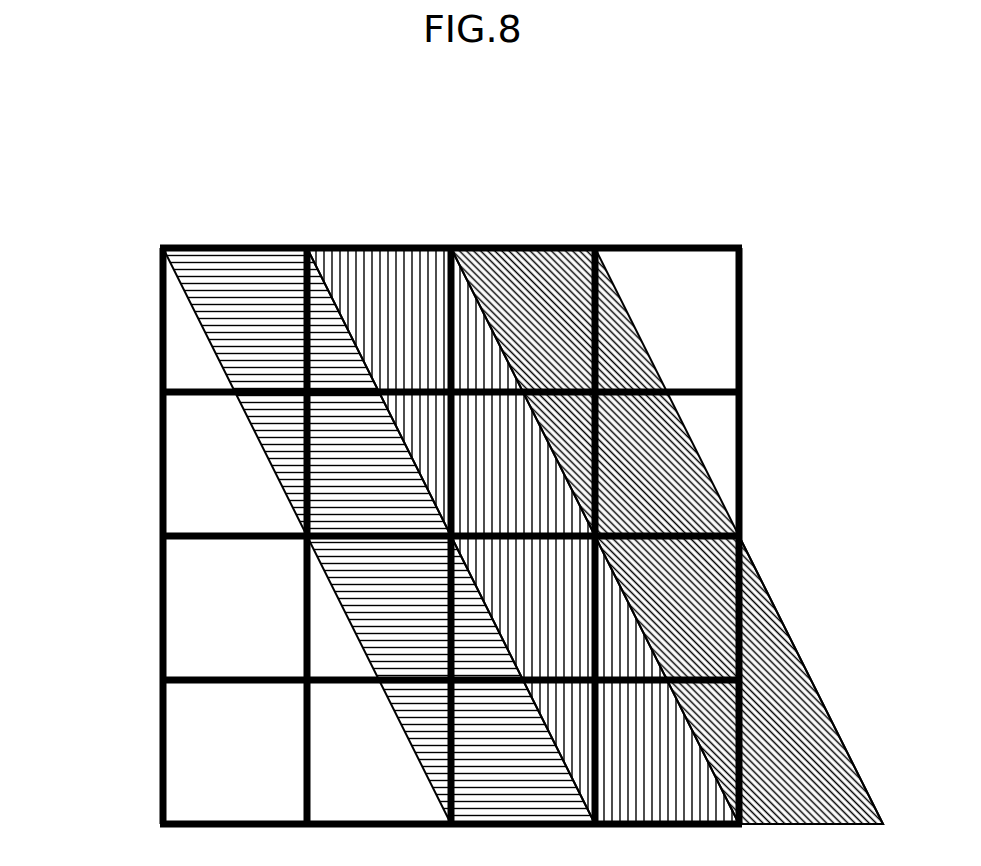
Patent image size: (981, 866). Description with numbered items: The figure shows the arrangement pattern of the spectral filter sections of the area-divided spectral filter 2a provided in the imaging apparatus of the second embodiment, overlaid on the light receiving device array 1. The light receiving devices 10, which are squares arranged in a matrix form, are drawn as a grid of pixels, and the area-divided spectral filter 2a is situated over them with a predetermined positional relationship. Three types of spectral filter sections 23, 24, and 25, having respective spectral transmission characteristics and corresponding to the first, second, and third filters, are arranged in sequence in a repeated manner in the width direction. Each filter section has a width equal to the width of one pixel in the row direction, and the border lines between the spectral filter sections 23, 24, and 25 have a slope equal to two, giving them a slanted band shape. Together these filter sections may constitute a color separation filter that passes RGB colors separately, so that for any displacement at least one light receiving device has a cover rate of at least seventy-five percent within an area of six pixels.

The light receiving device array 1 is at (128, 318).
The light receiving device 10 is at (215, 498).
The spectral filter section 23 is at (238, 270).
The spectral filter section 24 is at (352, 270).
The spectral filter section 25 is at (534, 280).
The area-divided spectral filter 2a is at (810, 648).